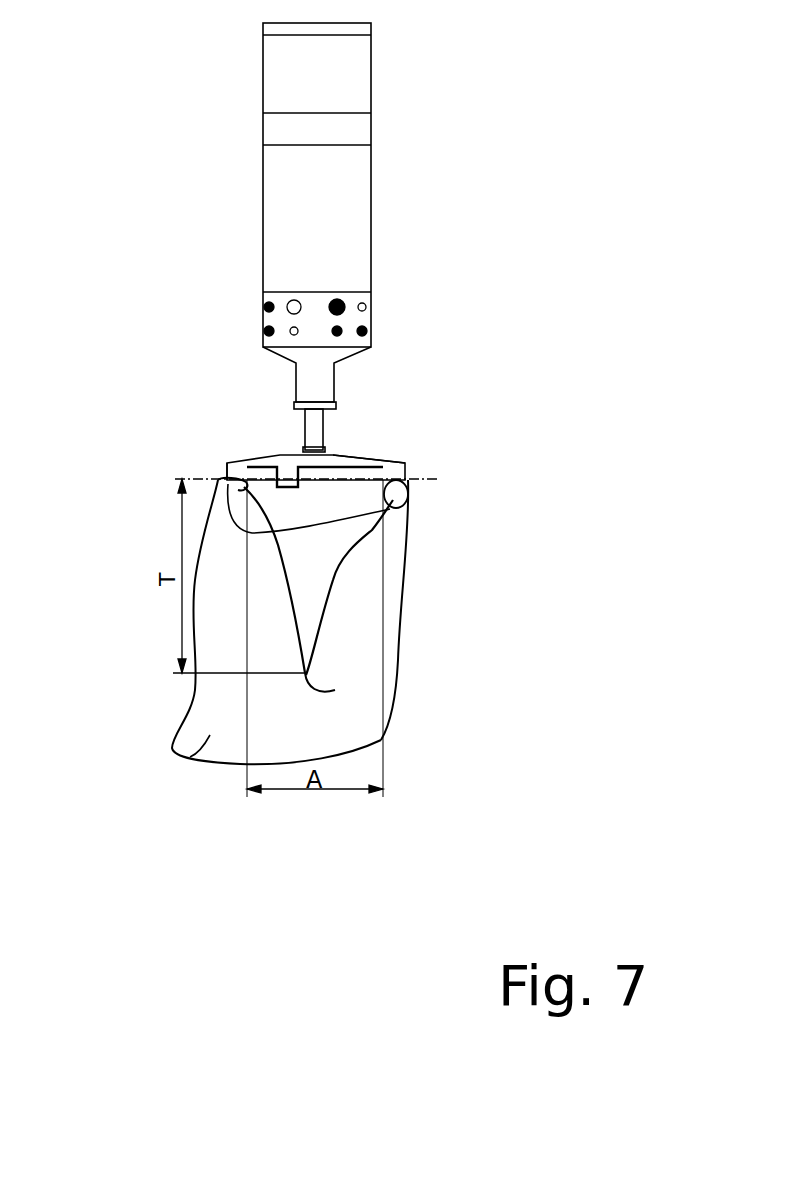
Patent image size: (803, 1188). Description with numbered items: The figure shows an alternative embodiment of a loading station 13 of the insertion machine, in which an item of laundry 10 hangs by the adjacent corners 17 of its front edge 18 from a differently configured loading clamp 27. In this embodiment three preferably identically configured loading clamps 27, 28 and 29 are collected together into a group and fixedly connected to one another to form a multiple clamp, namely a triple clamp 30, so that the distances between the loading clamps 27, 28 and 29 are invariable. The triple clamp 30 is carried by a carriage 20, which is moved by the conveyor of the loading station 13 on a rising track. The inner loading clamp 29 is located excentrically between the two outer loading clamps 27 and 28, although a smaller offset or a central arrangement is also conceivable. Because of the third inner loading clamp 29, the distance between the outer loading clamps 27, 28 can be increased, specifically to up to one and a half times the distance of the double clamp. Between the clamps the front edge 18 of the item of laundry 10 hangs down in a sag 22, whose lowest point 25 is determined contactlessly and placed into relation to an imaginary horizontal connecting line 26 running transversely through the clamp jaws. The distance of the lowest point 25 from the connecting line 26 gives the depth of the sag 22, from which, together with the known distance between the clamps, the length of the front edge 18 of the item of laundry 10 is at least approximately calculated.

The item of laundry 10 is at (318, 654).
The loading station 13 is at (400, 275).
The corners 17 is at (390, 509).
The front edge 18 is at (409, 581).
The sag 22 is at (320, 628).
The carriage 20 is at (315, 432).
The lowest point 25 is at (335, 690).
The connecting line 26 is at (435, 480).
The outer loading clamp 27 is at (233, 473).
The outer loading clamp 28 is at (309, 414).
The inner loading clamp 29 is at (290, 475).
The triple clamp 30 is at (382, 450).